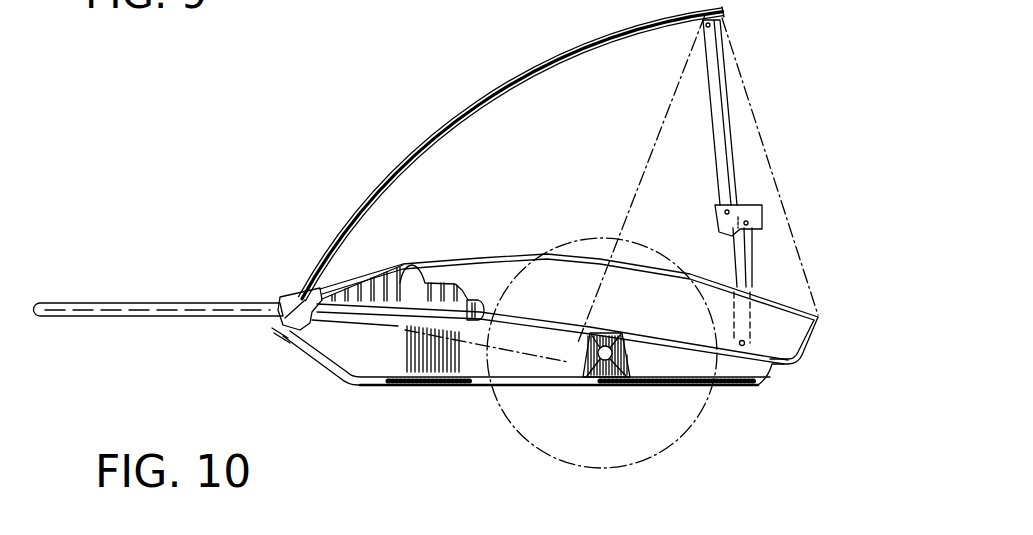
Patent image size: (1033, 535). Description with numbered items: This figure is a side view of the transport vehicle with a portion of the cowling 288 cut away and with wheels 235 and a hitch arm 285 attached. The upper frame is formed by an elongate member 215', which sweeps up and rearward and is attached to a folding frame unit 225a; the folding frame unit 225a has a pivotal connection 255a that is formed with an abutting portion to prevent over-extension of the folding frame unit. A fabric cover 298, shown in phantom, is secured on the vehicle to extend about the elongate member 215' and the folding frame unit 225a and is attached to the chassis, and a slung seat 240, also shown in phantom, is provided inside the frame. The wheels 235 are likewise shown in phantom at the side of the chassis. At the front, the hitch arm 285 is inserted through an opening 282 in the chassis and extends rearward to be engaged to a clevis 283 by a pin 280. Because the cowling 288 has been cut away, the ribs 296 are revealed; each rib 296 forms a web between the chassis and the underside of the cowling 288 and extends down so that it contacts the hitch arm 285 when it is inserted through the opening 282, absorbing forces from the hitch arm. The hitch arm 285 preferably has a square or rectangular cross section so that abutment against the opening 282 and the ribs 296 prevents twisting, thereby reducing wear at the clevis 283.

The elongate member 215' is at (512, 154).
The fabric cover 298 is at (744, 62).
The folding frame unit 225a is at (718, 125).
The pivotal connection 255a is at (747, 207).
The slung seat 240 is at (648, 150).
The cowling 288 is at (293, 300).
The clevis 283 is at (463, 285).
The hitch arm 285 is at (67, 301).
The opening 282 is at (270, 336).
The rib 296 is at (392, 282).
The pin 280 is at (470, 382).
The wheel 235 is at (712, 389).